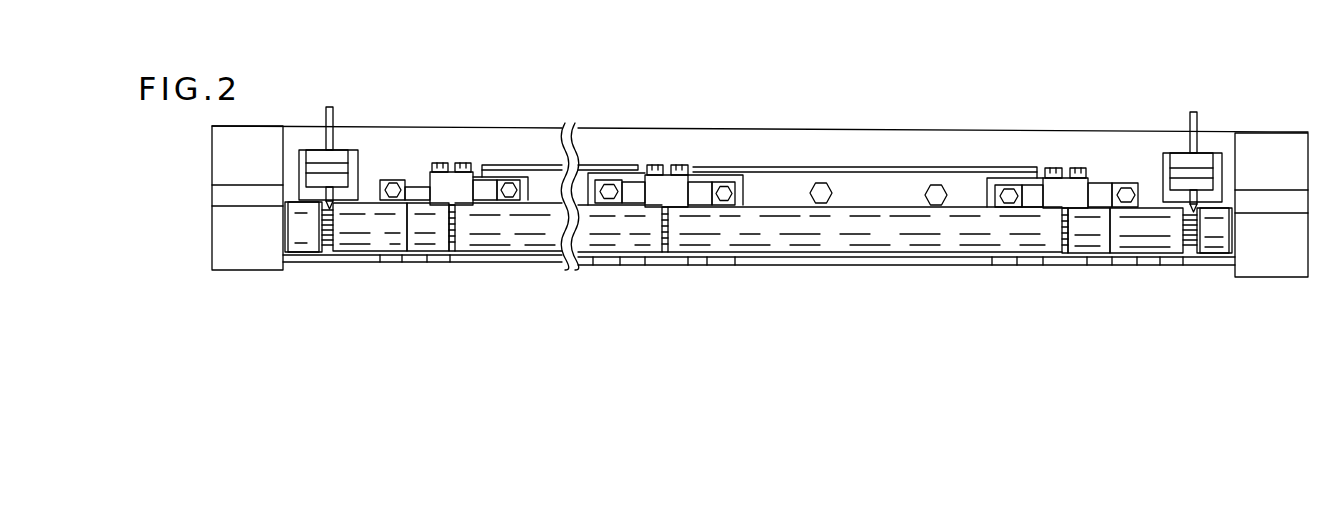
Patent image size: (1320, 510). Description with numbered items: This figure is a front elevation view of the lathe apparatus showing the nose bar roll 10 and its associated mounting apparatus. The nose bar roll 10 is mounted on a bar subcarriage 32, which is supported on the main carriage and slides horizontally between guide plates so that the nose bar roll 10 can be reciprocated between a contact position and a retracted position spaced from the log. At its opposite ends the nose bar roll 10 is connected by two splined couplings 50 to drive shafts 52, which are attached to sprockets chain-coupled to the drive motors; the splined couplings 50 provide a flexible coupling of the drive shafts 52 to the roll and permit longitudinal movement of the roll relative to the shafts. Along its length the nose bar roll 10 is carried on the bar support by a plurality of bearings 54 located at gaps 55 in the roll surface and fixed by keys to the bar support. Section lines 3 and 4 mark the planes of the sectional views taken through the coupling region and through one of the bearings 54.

The nose bar roll 10 is at (896, 238).
The bar subcarriage 32 is at (843, 135).
The splined coupling 50 is at (419, 260).
The drive shaft 52 is at (283, 228).
The bearing 54 is at (485, 185).
The gap 55 is at (455, 213).
The section line 3- 3 is at (352, 167).
The section line 4- 4 is at (632, 102).